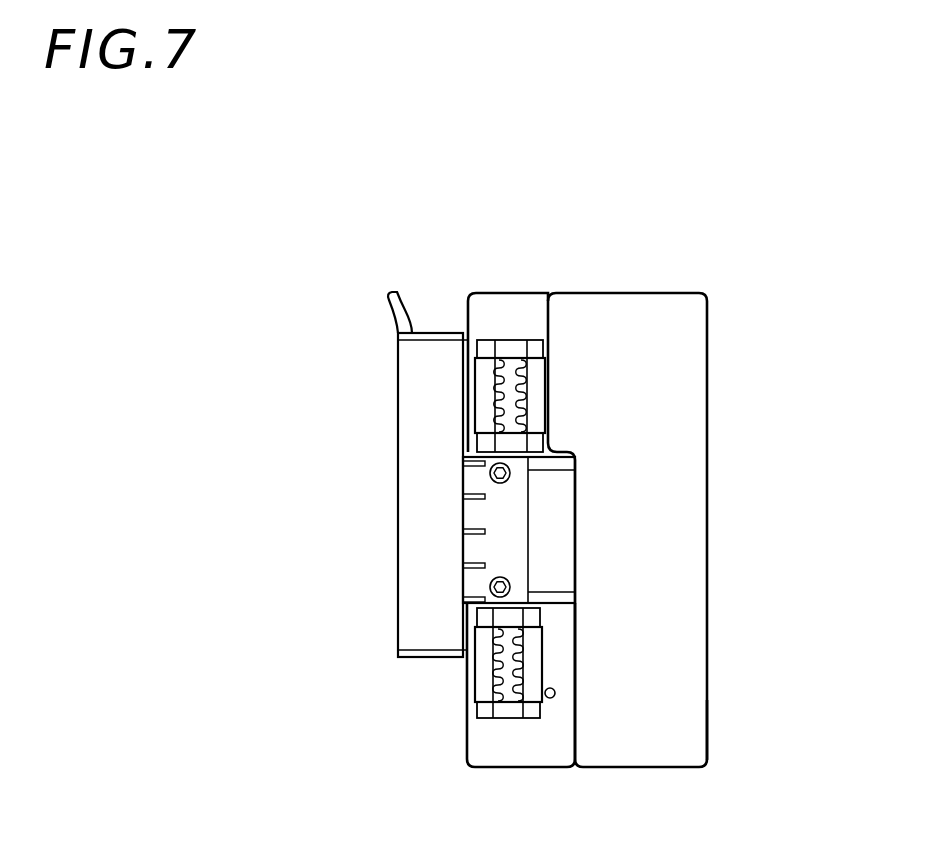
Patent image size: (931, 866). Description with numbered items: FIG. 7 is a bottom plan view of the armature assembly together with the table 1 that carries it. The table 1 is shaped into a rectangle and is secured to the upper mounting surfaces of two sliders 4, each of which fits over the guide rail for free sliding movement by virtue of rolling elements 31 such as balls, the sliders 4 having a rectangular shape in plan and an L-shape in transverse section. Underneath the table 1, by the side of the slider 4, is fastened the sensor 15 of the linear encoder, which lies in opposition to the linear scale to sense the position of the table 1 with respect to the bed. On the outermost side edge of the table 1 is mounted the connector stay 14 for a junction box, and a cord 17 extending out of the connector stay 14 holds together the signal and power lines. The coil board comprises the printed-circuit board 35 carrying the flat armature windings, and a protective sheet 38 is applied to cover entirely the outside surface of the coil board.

The table 1 is at (536, 309).
The slider 4 is at (487, 370).
The coil spring 31 is at (517, 372).
The protective sheet 38 is at (648, 322).
The printed-circuit board 35 is at (673, 675).
The sensor 15 is at (560, 537).
The connector stay 14 is at (415, 446).
The cord 17 is at (389, 311).